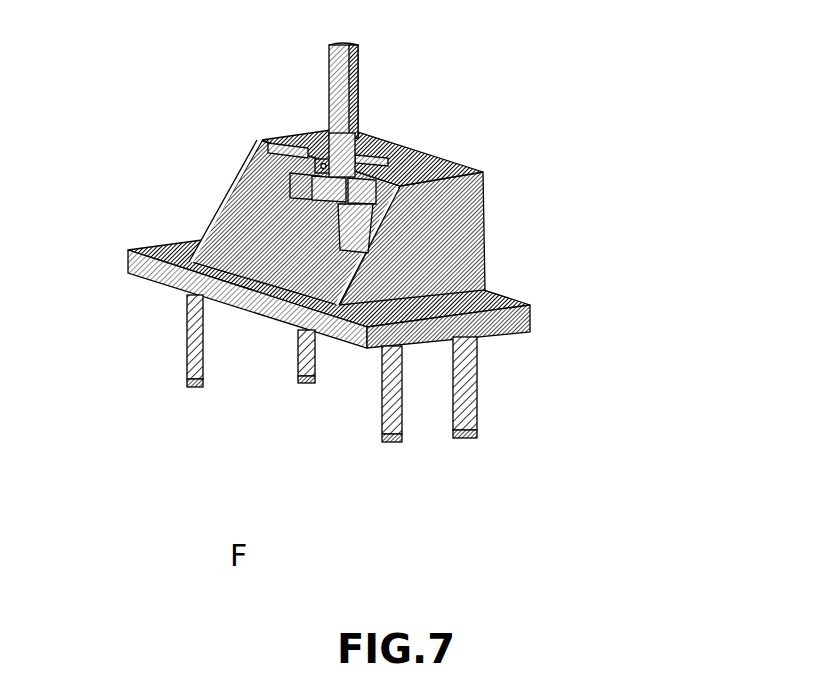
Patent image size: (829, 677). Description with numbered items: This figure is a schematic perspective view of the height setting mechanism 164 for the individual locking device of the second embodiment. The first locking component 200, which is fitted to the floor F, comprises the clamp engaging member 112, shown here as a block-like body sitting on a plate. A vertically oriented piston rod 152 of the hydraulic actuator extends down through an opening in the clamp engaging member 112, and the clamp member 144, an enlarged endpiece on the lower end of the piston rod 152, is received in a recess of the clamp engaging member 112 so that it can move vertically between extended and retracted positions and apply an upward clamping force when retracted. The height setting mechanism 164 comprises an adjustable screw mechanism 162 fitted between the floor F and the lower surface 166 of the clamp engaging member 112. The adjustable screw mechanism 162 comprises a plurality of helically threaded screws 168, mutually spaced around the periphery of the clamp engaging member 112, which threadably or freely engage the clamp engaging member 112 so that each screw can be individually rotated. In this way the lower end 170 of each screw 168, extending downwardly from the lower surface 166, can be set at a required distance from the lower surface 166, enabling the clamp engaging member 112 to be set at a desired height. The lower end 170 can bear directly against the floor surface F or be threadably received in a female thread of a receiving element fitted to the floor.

The clamp engaging member 112 is at (485, 212).
The clamp member 144 is at (317, 173).
The piston rod 152 is at (342, 75).
The adjustable screw mechanism 162 is at (477, 405).
The height setting mechanism 164 is at (665, 373).
The lower surface 166 is at (492, 337).
The helically threaded screws 168 is at (190, 362).
The lower end 170 is at (193, 388).
The first locking component 200 is at (413, 150).